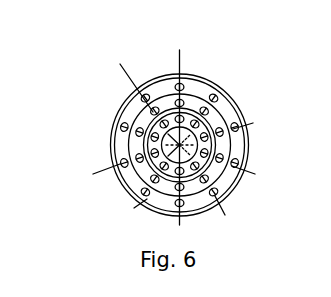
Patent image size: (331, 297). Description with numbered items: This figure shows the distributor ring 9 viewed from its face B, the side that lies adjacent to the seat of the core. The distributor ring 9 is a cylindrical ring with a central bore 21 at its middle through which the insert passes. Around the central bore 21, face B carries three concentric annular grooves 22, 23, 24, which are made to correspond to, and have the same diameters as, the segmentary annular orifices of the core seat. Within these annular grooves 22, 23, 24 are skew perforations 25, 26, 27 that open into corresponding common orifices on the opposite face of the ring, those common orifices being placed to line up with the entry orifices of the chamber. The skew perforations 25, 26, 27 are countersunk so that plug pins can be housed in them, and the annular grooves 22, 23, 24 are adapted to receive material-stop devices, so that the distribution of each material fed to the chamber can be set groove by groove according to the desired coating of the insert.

The distributor ring 9 is at (185, 79).
The central bore 21 is at (146, 98).
The annular groove 22 is at (141, 188).
The annular groove 23 is at (160, 193).
The annular groove 24 is at (133, 177).
The skew perforation 25 is at (138, 132).
The skew perforation 26 is at (124, 130).
The skew perforation 27 is at (121, 163).